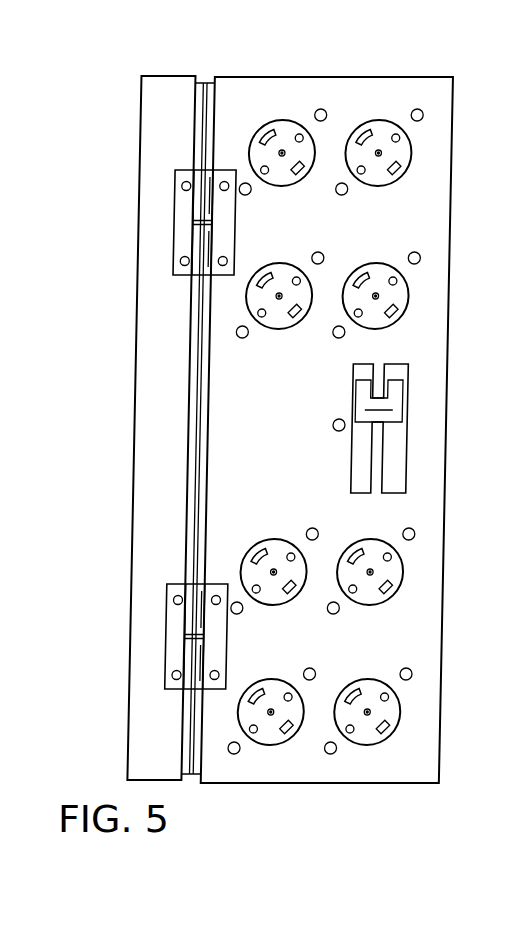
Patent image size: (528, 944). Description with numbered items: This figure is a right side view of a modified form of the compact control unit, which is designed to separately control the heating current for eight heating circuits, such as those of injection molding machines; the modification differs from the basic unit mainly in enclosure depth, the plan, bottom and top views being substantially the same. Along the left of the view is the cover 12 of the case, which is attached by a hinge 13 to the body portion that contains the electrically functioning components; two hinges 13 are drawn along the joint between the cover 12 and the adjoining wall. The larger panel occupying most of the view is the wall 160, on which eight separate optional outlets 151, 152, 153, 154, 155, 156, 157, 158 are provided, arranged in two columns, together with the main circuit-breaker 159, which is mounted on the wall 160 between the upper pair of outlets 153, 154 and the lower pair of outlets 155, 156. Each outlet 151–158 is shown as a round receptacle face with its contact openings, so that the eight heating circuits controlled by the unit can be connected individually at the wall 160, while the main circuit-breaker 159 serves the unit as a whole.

The cover 12 is at (172, 88).
The hinge 13 is at (187, 212).
The optional outlet 151 is at (274, 124).
The optional outlet 152 is at (392, 122).
The optional outlet 153 is at (288, 270).
The optional outlet 154 is at (388, 265).
The optional outlet 155 is at (284, 594).
The optional outlet 156 is at (390, 594).
The optional outlet 157 is at (283, 733).
The optional outlet 158 is at (397, 737).
The main circuit-breaker 159 is at (380, 396).
The wall 160 is at (452, 330).